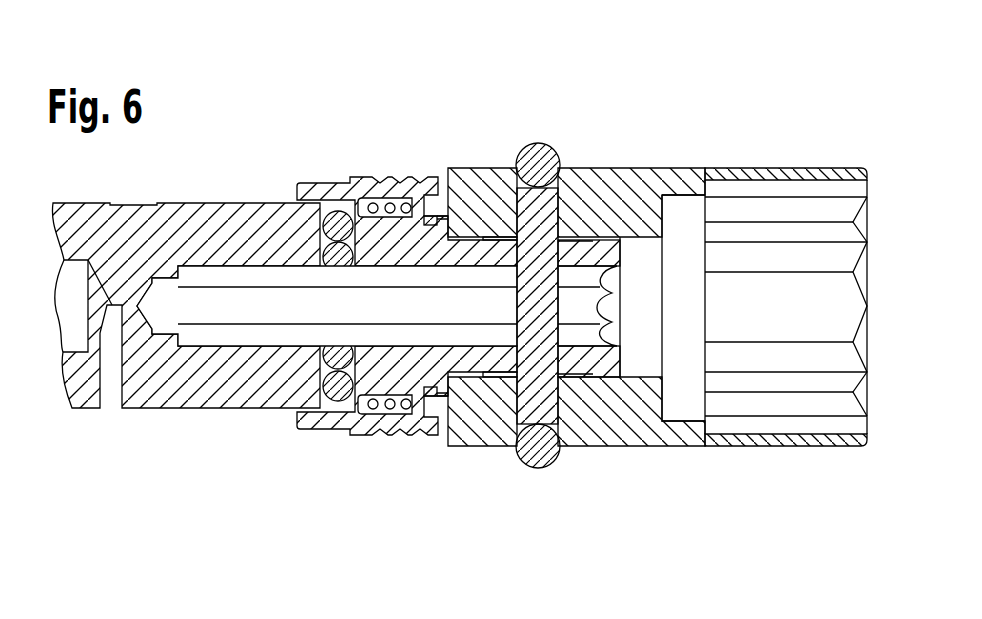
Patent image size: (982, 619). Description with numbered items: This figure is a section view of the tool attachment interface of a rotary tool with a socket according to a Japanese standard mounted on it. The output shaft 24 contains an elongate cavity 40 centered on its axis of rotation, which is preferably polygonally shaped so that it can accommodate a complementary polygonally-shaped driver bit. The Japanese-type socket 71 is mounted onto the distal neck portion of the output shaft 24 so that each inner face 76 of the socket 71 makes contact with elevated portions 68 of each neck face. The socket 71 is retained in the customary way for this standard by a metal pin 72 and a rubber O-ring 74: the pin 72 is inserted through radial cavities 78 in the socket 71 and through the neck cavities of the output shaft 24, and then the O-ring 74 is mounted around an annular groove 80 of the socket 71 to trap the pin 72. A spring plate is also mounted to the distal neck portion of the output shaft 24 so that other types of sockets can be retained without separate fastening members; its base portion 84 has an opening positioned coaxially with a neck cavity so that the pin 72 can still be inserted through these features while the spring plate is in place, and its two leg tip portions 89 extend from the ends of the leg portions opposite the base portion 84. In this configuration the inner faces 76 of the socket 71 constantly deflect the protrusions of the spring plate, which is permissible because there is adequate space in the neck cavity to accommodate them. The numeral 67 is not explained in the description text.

The output shaft 24 is at (215, 227).
The elongate cavity 40 is at (248, 312).
The elevated portions 68 is at (474, 235).
The base portion 84 is at (498, 237).
The O-ring 74 is at (540, 145).
The pin 72 is at (574, 197).
The socket 71 is at (607, 190).
The threaded element 67 is at (645, 248).
The inner face 76 is at (670, 250).
The leg tip portions 89 is at (508, 374).
The radial cavities 78 is at (486, 372).
The annular groove 80 is at (560, 450).